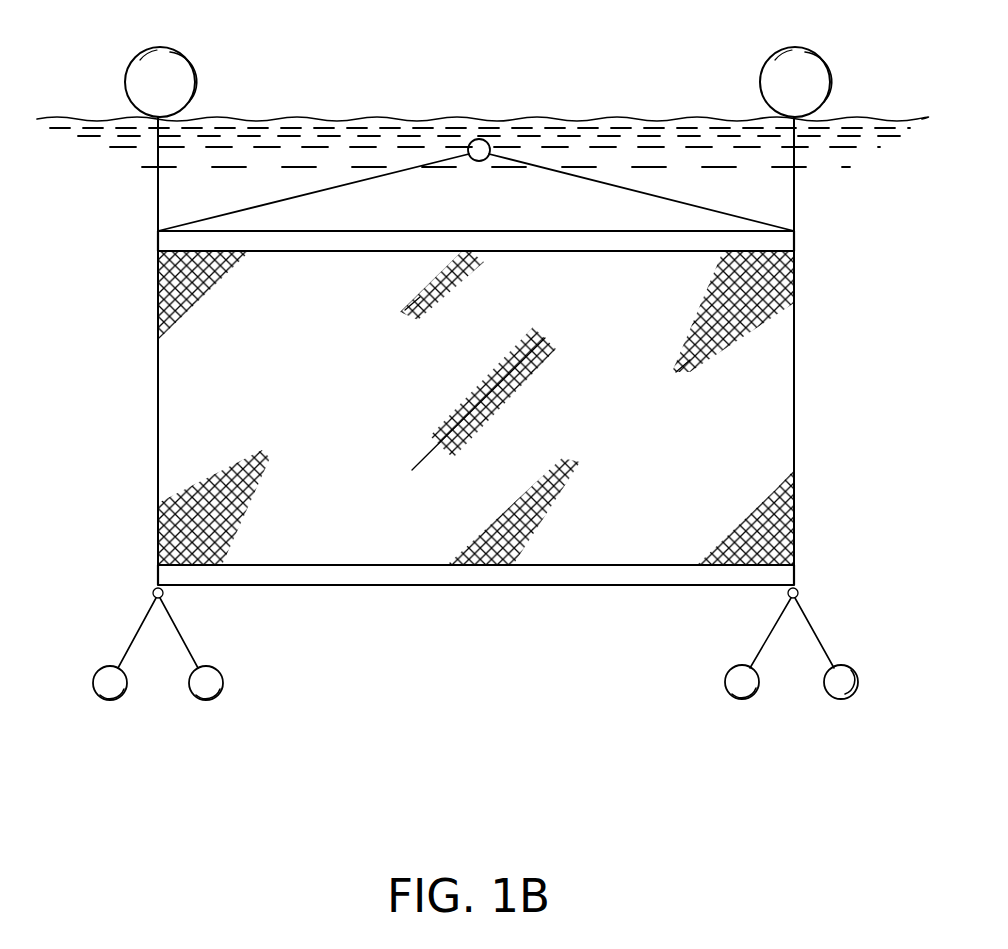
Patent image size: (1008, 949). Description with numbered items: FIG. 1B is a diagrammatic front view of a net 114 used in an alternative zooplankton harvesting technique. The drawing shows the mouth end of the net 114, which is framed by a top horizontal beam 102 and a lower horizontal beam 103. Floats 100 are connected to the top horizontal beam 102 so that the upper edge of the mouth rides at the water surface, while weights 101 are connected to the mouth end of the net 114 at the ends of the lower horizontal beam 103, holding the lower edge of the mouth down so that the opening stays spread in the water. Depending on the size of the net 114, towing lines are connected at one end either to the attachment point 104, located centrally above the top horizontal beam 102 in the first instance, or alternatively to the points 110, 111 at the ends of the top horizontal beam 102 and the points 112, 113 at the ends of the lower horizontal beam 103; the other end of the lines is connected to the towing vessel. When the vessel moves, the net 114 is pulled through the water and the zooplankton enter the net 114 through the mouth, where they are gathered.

The floats 100 is at (184, 56).
The weights 101 is at (118, 700).
The top horizontal beam 102 is at (478, 230).
The lower horizontal beam 103 is at (498, 586).
The attachment point 104 is at (480, 139).
The attachment point 110 is at (795, 240).
The attachment point 111 is at (157, 240).
The attachment point 112 is at (153, 592).
The attachment point 113 is at (798, 591).
The net 114 is at (808, 420).